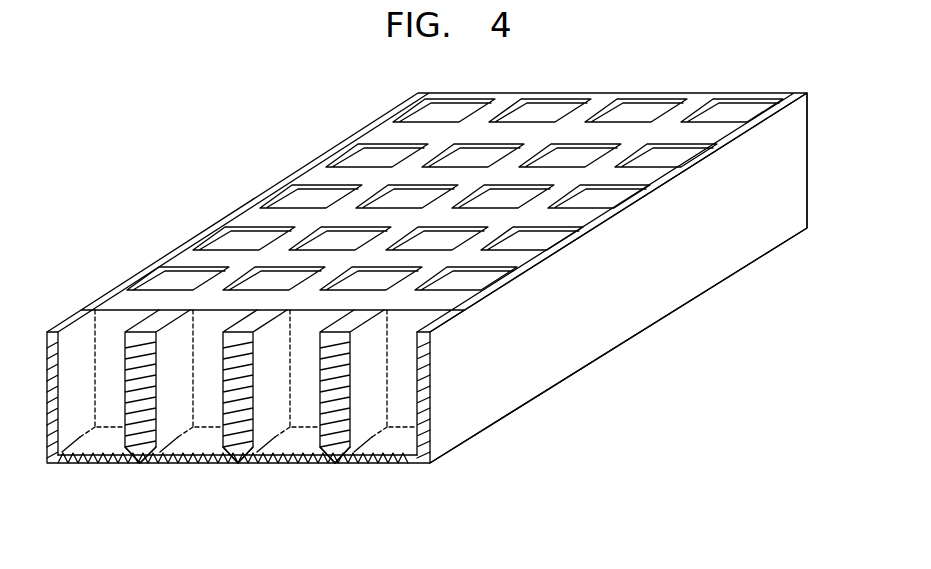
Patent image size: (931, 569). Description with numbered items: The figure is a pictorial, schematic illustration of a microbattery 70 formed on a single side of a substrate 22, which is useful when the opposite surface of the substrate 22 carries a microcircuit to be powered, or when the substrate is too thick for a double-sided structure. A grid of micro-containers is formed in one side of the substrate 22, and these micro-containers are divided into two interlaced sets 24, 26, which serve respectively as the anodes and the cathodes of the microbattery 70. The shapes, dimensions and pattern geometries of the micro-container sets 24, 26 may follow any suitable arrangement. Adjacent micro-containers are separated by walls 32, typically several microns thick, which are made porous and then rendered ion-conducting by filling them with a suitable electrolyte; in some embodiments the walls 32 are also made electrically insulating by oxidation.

The microbattery 70 is at (200, 157).
The substrate 22 is at (505, 370).
The micro-container set 24 is at (290, 186).
The micro-container set 26 is at (703, 107).
The walls 32 is at (330, 455).